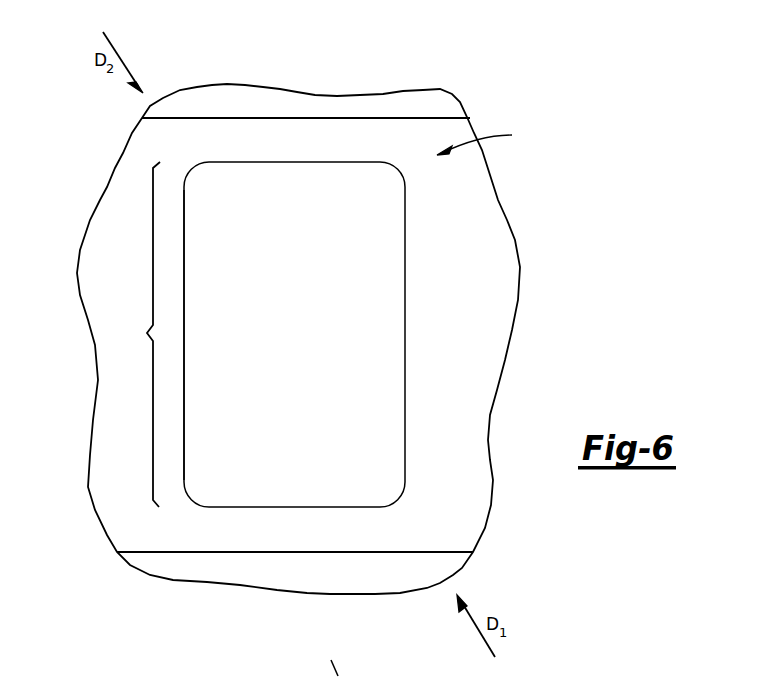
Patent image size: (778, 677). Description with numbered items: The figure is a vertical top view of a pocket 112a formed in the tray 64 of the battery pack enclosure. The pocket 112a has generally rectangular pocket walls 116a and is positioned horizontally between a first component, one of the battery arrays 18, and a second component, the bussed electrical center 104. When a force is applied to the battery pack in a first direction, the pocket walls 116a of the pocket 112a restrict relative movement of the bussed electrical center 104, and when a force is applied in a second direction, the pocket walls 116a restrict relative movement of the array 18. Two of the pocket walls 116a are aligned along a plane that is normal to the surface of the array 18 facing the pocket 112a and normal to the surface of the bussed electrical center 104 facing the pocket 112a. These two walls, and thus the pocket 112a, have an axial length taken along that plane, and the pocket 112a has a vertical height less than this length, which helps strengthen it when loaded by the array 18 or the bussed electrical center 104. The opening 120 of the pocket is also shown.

The battery array 18 is at (177, 565).
The tray 64 is at (468, 208).
The bussed electrical center 104 is at (422, 102).
The pocket 112a is at (492, 141).
The pocket walls 116a is at (183, 410).
The window 120 is at (360, 312).